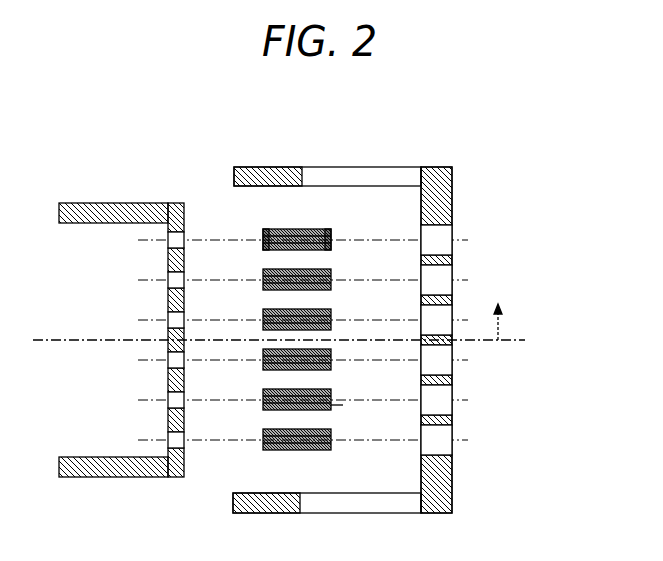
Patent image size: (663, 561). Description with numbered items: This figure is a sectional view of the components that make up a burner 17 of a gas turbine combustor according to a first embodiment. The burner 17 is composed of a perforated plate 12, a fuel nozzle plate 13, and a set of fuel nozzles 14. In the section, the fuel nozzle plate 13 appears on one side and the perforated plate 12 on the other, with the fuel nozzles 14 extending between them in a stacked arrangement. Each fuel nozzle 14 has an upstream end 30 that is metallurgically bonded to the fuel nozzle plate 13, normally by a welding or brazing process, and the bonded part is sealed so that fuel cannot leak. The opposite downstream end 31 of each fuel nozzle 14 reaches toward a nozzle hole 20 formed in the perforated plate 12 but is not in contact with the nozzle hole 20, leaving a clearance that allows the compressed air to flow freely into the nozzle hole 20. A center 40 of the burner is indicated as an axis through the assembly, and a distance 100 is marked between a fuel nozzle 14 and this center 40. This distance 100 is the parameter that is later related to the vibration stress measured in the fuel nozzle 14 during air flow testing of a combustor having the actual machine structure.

The perforated plate 12 is at (453, 195).
The fuel nozzle plate 13 is at (186, 211).
The fuel nozzle 14 is at (287, 232).
The burner 17 is at (479, 137).
The nozzle hole 20 is at (453, 232).
The upstream end 30 is at (263, 231).
The downstream end 31 is at (332, 231).
The center 40 is at (525, 340).
The distance 100 is at (503, 322).